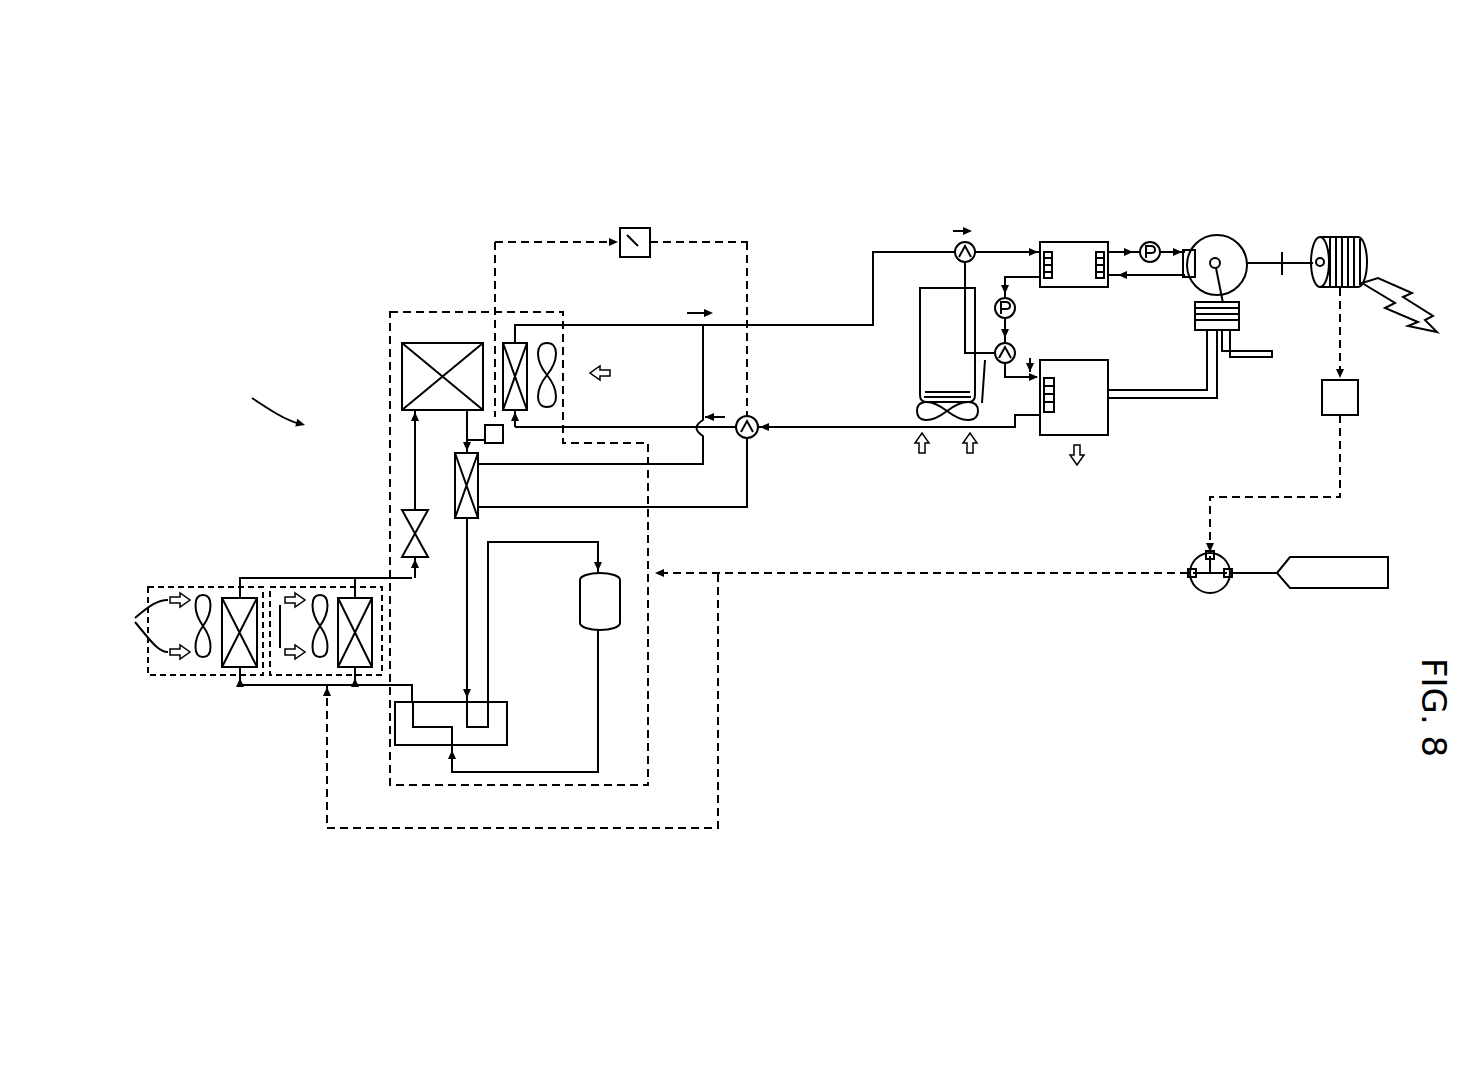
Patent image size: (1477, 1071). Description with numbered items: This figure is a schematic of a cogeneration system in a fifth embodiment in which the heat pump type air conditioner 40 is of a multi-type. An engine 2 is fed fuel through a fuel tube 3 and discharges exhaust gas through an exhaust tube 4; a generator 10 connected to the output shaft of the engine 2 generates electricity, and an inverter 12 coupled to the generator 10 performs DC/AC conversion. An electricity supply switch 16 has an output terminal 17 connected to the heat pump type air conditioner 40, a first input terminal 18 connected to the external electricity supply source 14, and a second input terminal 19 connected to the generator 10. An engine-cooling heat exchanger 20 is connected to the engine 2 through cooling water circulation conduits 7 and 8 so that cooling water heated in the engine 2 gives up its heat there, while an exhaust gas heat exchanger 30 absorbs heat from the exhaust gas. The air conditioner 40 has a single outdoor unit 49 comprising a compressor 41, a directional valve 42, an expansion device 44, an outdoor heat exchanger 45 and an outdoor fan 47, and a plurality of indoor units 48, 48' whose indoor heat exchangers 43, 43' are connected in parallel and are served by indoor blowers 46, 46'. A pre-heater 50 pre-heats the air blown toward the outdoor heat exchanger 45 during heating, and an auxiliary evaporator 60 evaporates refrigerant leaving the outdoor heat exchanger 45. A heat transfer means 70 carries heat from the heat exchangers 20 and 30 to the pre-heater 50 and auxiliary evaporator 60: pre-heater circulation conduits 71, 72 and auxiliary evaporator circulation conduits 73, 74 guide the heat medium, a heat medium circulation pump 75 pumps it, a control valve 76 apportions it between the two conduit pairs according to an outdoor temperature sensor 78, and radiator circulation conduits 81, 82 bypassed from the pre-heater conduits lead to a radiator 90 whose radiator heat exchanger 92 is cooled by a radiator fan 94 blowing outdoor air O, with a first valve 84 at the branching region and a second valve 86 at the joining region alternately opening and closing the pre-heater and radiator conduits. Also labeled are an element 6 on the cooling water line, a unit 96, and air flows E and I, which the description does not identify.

The engine 2 is at (1222, 237).
The fuel tube 3 is at (1252, 357).
The exhaust tube 4 is at (1162, 400).
The pressure gauge 6 is at (1152, 242).
The cooling water circulation conduit 7 is at (1163, 277).
The cooling water circulation conduit 8 is at (1105, 248).
The generator 10 is at (1338, 242).
The inverter 12 is at (1358, 397).
The external electricity supply source 14 is at (1338, 588).
The electricity supply switch 16 is at (1205, 593).
The output terminal 17 is at (1190, 568).
The first input terminal 18 is at (1230, 585).
The second input terminal 19 is at (1215, 553).
The engine-cooling heat exchanger 20 is at (1062, 250).
The exhaust gas heat exchanger 30 is at (1060, 437).
The heat pump type air conditioner 40 is at (264, 405).
The compressor 41 is at (580, 585).
The directional valve 42 is at (395, 745).
The indoor heat exchanger 43 is at (324, 645).
The indoor heat exchanger 43' is at (205, 653).
The expansion device 44 is at (402, 530).
The outdoor heat exchanger 45 is at (402, 380).
The indoor fan 46 is at (279, 596).
The indoor blower 46' is at (161, 596).
The outdoor fan 47 is at (547, 343).
The indoor unit 48 is at (304, 588).
The indoor unit 48' is at (185, 588).
The outdoor unit 49 is at (390, 330).
The pre-heater 50 is at (515, 343).
The auxiliary evaporator 60 is at (455, 490).
The heat transfer means 70 is at (762, 522).
The pre-heater circulation conduit 71 is at (873, 248).
The pre-heater circulation conduit 72 is at (803, 435).
The auxiliary evaporator circulation conduit 73 is at (725, 510).
The auxiliary evaporator circulation conduit 74 is at (695, 350).
The heat medium circulation pump 75 is at (1016, 308).
The control valve 76 is at (752, 418).
The outdoor temperature sensor 78 is at (485, 435).
The radiator circulation conduit 81 is at (982, 403).
The radiator circulation conduit 82 is at (960, 282).
The first valve 84 is at (1016, 353).
The second valve 86 is at (970, 242).
The radiator 90 is at (912, 373).
The radiator heat exchanger 92 is at (927, 385).
The radiator fan 94 is at (958, 420).
The control unit 96 is at (627, 228).
The outdoor air O is at (918, 453).
The exhaust air E is at (1080, 455).
The inside air I is at (144, 626).